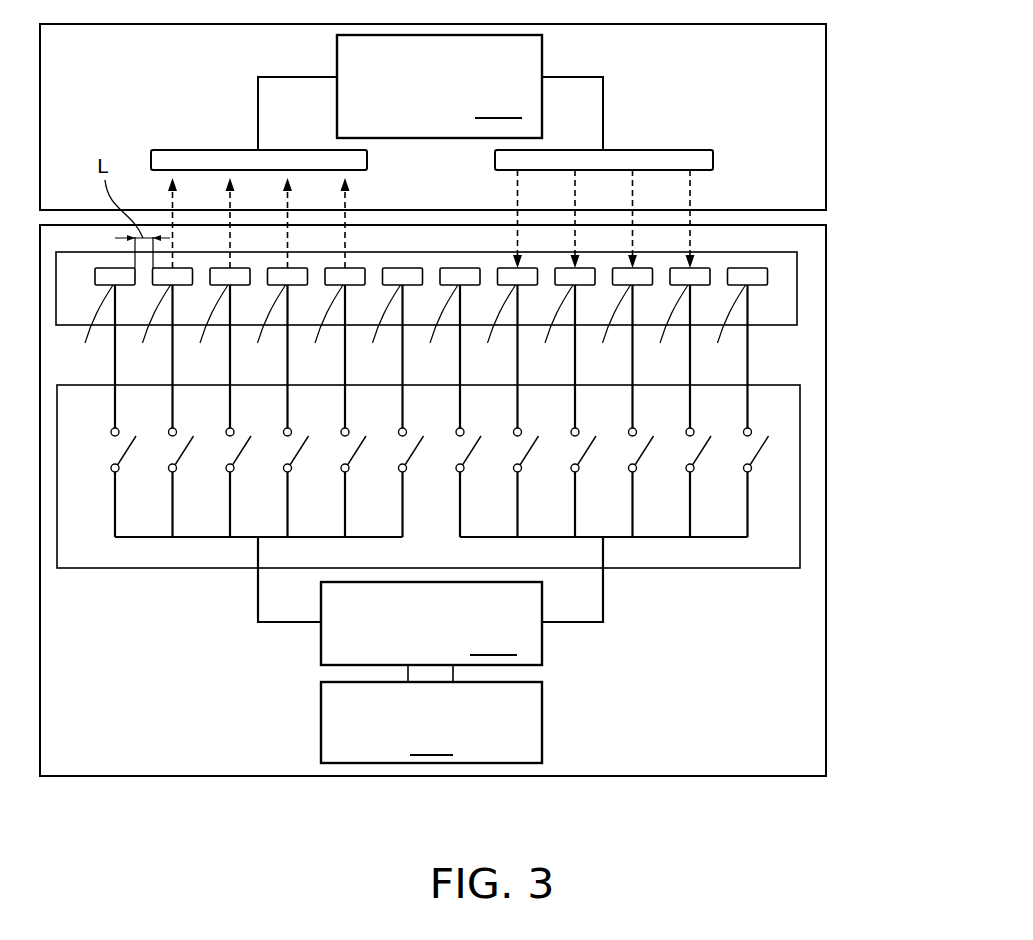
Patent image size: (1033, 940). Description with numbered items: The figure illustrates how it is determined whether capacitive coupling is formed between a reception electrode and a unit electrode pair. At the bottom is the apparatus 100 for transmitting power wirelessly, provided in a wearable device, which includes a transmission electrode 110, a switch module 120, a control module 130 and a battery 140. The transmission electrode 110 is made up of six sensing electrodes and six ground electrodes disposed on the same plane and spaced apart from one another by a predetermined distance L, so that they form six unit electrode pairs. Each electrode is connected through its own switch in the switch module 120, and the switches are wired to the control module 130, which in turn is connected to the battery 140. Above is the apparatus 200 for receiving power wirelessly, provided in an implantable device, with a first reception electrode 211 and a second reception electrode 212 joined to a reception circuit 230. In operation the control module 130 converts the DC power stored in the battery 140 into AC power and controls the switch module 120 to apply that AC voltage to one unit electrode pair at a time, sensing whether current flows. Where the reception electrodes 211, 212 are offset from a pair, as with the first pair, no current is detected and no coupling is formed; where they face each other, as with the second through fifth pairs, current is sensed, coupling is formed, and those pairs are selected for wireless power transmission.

The apparatus for transmitting power wirelessly 100 is at (826, 360).
The transmission electrode 110 is at (797, 283).
The switch module 120 is at (800, 475).
The control module 130 is at (431, 623).
The battery 140 is at (431, 722).
The apparatus for receiving power wirelessly 200 is at (826, 117).
The reception electrode 211 is at (194, 147).
The reception electrode 212 is at (669, 148).
The reception circuit 230 is at (439, 86).